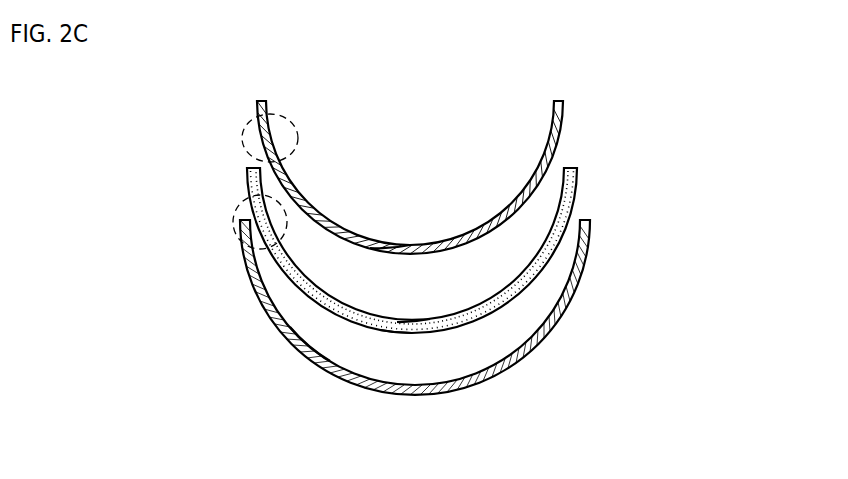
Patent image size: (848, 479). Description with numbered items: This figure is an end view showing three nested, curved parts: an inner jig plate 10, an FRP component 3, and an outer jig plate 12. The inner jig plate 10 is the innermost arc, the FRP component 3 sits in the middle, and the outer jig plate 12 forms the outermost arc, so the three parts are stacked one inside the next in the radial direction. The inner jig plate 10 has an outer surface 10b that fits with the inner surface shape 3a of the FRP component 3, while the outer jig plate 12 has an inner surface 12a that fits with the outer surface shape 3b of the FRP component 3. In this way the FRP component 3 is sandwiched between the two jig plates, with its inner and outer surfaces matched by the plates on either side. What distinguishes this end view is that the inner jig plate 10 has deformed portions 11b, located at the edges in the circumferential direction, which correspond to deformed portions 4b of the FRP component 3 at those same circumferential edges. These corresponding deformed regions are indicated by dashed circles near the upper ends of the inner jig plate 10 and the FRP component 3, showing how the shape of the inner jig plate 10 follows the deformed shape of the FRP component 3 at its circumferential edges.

The inner jig plate 10 is at (567, 112).
The outer surface 10b is at (370, 248).
The deformed portions 11b is at (298, 132).
The FRP component 3 is at (243, 182).
The inner surface shape 3a is at (397, 322).
The outer surface shape 3b is at (395, 333).
The deformed portions 4b is at (250, 237).
The outer jig plate 12 is at (595, 232).
The inner surface 12a is at (305, 342).